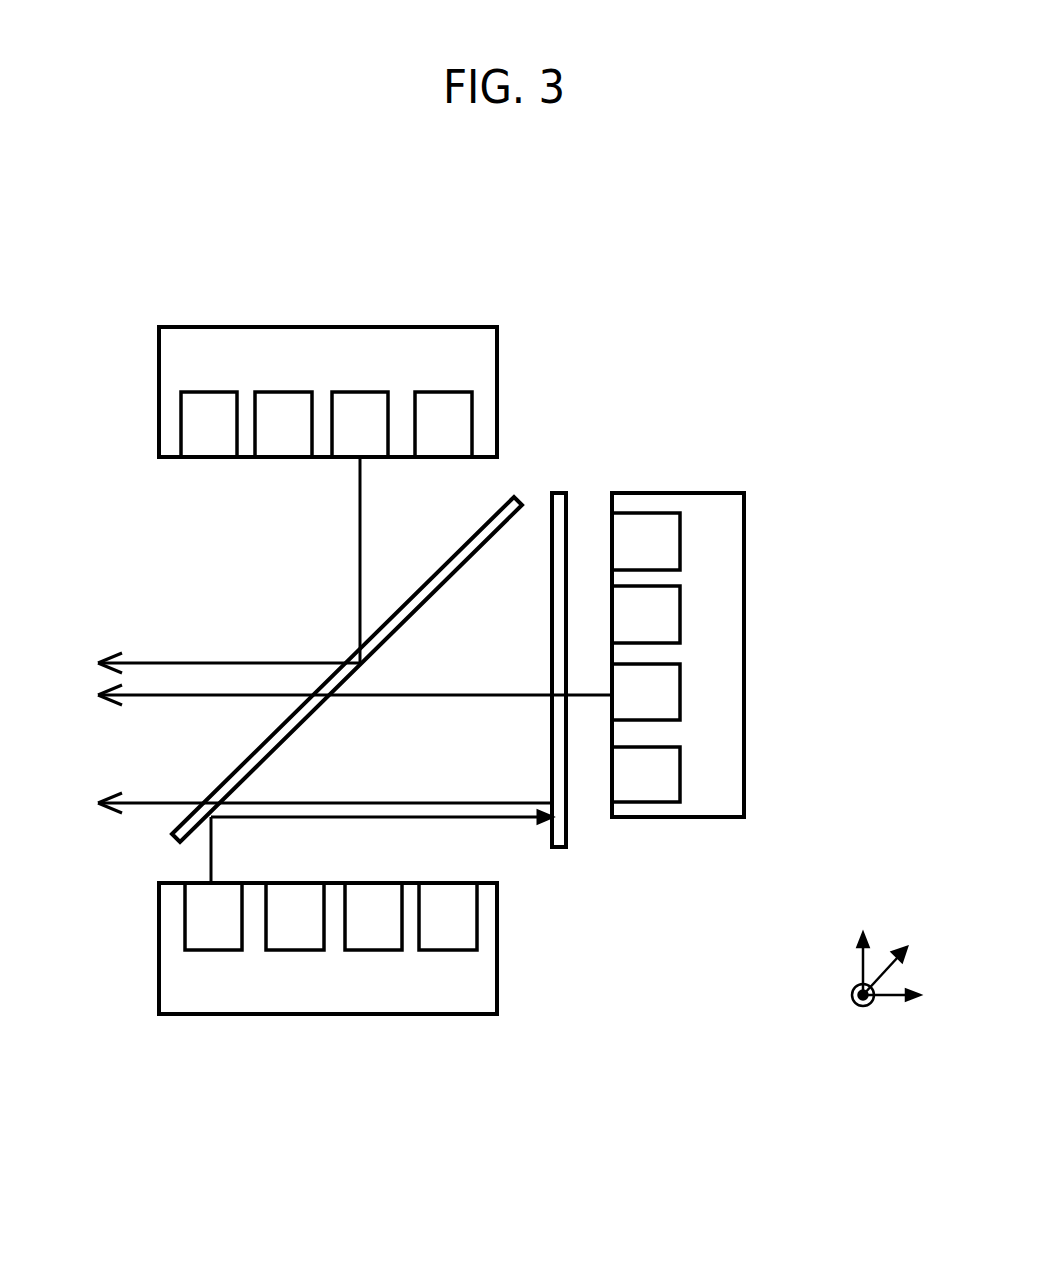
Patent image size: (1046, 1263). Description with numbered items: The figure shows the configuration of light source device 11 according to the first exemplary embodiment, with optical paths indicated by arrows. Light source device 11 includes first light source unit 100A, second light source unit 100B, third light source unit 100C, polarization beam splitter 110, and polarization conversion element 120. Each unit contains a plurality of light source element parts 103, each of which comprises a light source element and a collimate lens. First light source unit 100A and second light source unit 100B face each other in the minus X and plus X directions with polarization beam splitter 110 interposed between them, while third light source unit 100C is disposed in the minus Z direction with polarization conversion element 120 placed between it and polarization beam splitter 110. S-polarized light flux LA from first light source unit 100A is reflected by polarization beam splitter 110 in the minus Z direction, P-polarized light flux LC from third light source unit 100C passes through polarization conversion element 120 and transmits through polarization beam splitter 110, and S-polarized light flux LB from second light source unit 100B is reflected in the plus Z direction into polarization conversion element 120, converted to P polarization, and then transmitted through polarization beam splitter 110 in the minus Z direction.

The light source device 11 is at (107, 302).
The first light source unit 100A is at (362, 327).
The second light source unit 100B is at (292, 1014).
The third light source unit 100C is at (744, 622).
The light source element part 103 is at (442, 392).
The polarization beam splitter 110 is at (513, 497).
The polarization conversion element 120 is at (567, 845).